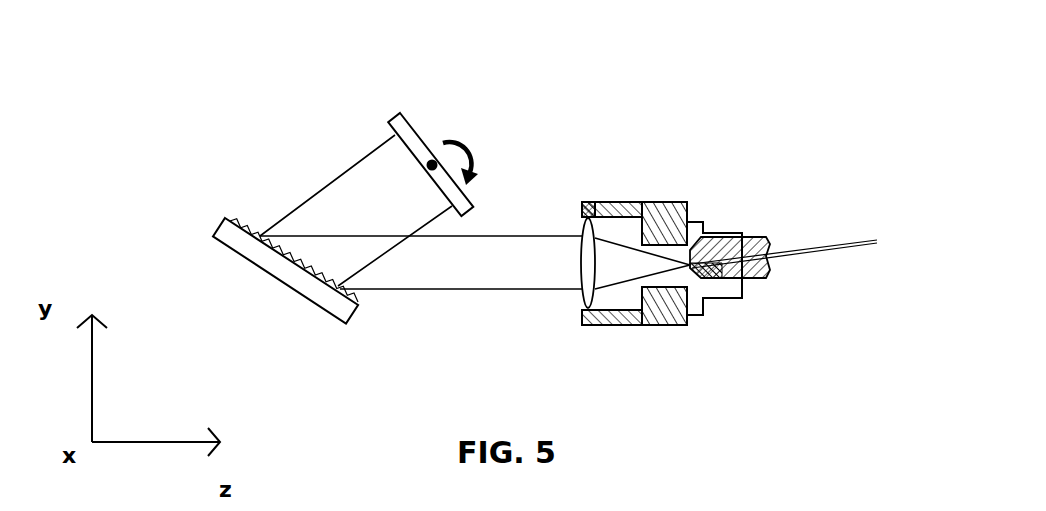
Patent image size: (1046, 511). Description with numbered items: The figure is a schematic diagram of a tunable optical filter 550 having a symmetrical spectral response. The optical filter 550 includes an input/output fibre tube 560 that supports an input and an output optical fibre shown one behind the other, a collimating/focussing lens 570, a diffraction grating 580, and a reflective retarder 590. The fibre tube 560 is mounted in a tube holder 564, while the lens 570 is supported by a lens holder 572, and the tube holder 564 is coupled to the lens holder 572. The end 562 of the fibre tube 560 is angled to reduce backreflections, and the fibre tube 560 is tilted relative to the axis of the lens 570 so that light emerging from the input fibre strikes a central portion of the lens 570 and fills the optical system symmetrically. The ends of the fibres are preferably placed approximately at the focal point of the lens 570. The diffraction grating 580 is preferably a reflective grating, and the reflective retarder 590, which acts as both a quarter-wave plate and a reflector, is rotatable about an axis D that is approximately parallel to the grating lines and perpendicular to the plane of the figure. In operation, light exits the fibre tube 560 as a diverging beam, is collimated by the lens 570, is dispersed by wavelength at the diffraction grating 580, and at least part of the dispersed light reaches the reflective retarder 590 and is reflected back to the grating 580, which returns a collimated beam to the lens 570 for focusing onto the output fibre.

The optical filter 550 is at (604, 143).
The input/output fibre tube 560 is at (752, 235).
The end of the fibre tube 562 is at (692, 272).
The tube holder 564 is at (728, 302).
The collimating/focussing lens 570 is at (577, 300).
The lens holder 572 is at (642, 200).
The diffraction grating 580 is at (353, 318).
The reflective retarder 590 is at (390, 117).
The axis D is at (432, 160).